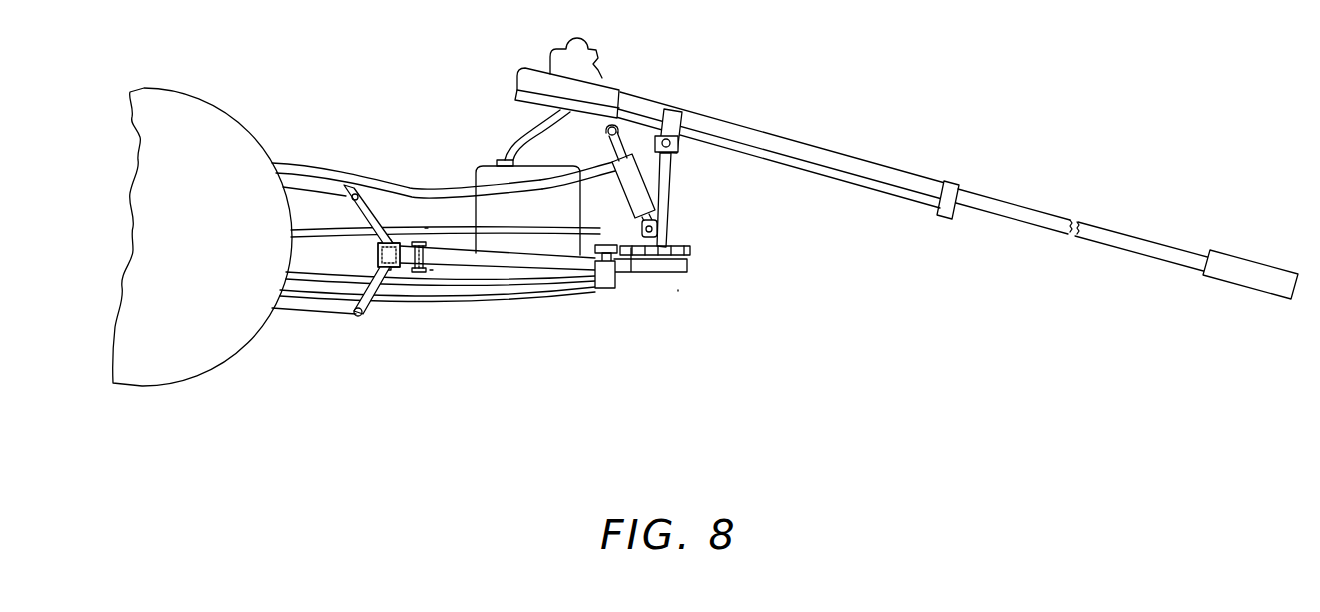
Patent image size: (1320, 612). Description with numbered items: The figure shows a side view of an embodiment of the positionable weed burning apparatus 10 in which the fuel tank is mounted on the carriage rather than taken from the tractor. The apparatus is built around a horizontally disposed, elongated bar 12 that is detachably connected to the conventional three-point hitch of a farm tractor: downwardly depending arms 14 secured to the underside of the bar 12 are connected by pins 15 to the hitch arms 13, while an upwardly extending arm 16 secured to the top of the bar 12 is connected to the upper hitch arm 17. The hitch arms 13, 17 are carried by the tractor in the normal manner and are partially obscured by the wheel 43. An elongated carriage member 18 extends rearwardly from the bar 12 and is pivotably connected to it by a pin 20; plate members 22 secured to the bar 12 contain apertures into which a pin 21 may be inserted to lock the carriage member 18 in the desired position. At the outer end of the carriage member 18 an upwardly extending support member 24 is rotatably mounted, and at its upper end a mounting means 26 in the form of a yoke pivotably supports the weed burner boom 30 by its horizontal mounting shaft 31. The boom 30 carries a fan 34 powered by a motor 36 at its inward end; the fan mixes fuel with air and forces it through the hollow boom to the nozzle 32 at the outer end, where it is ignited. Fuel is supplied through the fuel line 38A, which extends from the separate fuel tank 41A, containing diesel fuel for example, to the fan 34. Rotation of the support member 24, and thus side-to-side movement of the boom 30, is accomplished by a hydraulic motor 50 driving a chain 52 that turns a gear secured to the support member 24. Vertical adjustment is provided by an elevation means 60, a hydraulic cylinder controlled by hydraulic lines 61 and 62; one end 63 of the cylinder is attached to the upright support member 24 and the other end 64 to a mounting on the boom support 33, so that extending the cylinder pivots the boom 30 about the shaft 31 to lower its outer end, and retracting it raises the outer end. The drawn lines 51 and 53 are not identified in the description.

The positionable weed burning apparatus 10 is at (679, 298).
The elongated bar 12 is at (378, 253).
The arms of three-point hitch 13 is at (298, 313).
The downwardly depending arms 14 is at (365, 306).
The pins 15 is at (366, 305).
The upwardly extending arm 16 is at (357, 207).
The arm of three-point hitch 17 is at (313, 188).
The carriage member 18 is at (684, 265).
The pin 20 is at (388, 223).
The pin 21 is at (421, 242).
The plate members 22 is at (425, 228).
The support member 24 is at (670, 200).
The mounting means 26 is at (678, 153).
The weed burner boom 30 is at (898, 163).
The horizontal mounting shaft 31 is at (683, 122).
The nozzle 32 is at (1243, 257).
The boom support 33 is at (872, 198).
The fan 34 is at (617, 89).
The motor 36 is at (598, 59).
The fuel line 38A is at (538, 130).
The separate fuel tank 41A is at (478, 176).
The wheel 43 is at (205, 110).
The hydraulic motor 50 is at (603, 288).
The spring leaf 51 is at (502, 296).
The chain 52 is at (631, 259).
The spring leaf 53 is at (520, 283).
The elevation means 60 is at (619, 190).
The hydraulic line 61 is at (538, 232).
The hydraulic line 62 is at (600, 164).
The end of cylinder 63 is at (658, 229).
The end of cylinder 64 is at (606, 131).